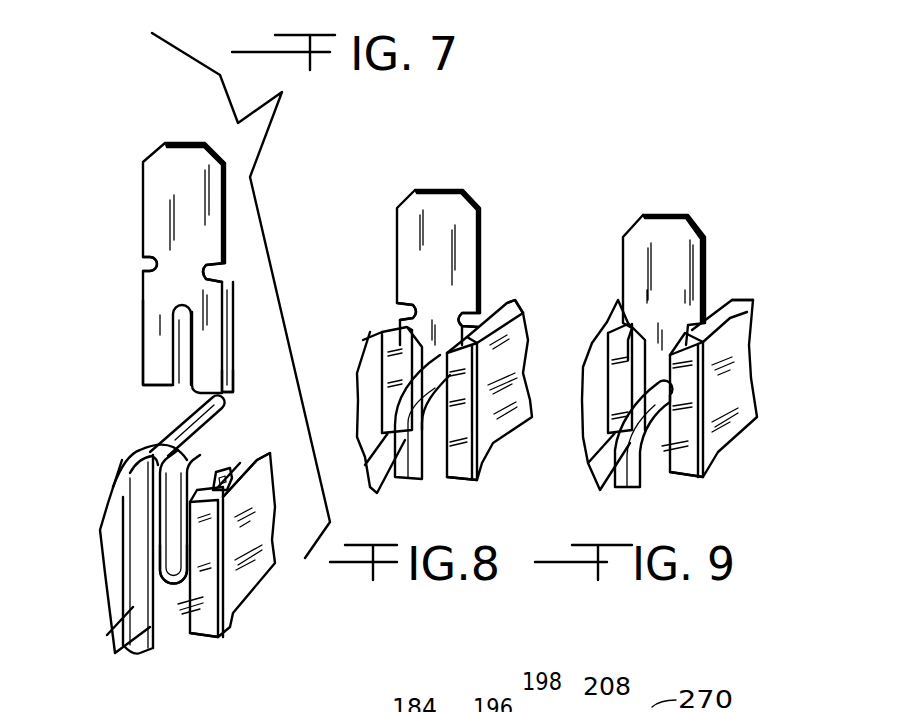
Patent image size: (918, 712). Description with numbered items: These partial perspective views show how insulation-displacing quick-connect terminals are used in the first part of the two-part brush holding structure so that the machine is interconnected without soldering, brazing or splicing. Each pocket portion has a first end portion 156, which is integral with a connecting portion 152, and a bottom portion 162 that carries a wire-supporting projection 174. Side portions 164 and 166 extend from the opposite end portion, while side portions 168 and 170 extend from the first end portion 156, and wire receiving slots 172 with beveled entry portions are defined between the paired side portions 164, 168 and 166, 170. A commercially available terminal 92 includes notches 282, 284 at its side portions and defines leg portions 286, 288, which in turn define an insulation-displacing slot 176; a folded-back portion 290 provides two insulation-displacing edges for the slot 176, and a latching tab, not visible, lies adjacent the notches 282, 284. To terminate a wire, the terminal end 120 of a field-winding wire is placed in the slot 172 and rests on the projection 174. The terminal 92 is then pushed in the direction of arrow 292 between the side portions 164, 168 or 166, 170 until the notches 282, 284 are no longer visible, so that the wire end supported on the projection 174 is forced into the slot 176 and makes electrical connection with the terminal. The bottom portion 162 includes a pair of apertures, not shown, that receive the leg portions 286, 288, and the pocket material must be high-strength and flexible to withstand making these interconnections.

In FIG. 7, the terminal 92 is at (165, 170).
In FIG. 8, the terminal 92 is at (450, 215).
In FIG. 9, the terminal 92 is at (665, 243).
In FIG. 7, the arrow 292 is at (185, 132).
In FIG. 8, the arrow 292 is at (437, 180).
In FIG. 7, the notch 282 is at (222, 273).
In FIG. 8, the notch 282 is at (455, 315).
In FIG. 7, the notch 284 is at (150, 265).
In FIG. 7, the leg portion 286 is at (160, 305).
In FIG. 7, the leg portion 288 is at (212, 378).
In FIG. 7, the folded-back portion 290 is at (252, 306).
In FIG. 7, the insulation-displacing slot 176 is at (183, 336).
In FIG. 7, the terminal end 120 is at (177, 428).
In FIG. 7, the side portion 166 is at (150, 452).
In FIG. 8, the side portion 166 is at (398, 313).
In FIG. 7, the side portion 164 is at (143, 490).
In FIG. 8, the side portion 164 is at (398, 340).
In FIG. 9, the side portion 164 is at (622, 332).
In FIG. 7, the wire receiving slot 172 is at (195, 476).
In FIG. 7, the wire-supporting projection 174 is at (173, 588).
In FIG. 8, the wire-supporting projection 174 is at (458, 462).
In FIG. 7, the first end portion 156 is at (243, 590).
In FIG. 8, the first end portion 156 is at (492, 424).
In FIG. 9, the first end portion 156 is at (720, 398).
In FIG. 7, the side portion 168 is at (236, 497).
In FIG. 8, the side portion 168 is at (515, 312).
In FIG. 9, the side portion 168 is at (720, 345).
In FIG. 7, the side portion 170 is at (230, 460).
In FIG. 8, the side portion 170 is at (480, 303).
In FIG. 9, the side portion 170 is at (733, 320).
In FIG. 7, the connecting portion 152 is at (258, 458).
In FIG. 8, the connecting portion 152 is at (500, 308).
In FIG. 9, the connecting portion 152 is at (738, 303).
In FIG. 7, the bottom portion 162 is at (208, 641).
In FIG. 8, the bottom portion 162 is at (490, 463).
In FIG. 9, the bottom portion 162 is at (730, 438).